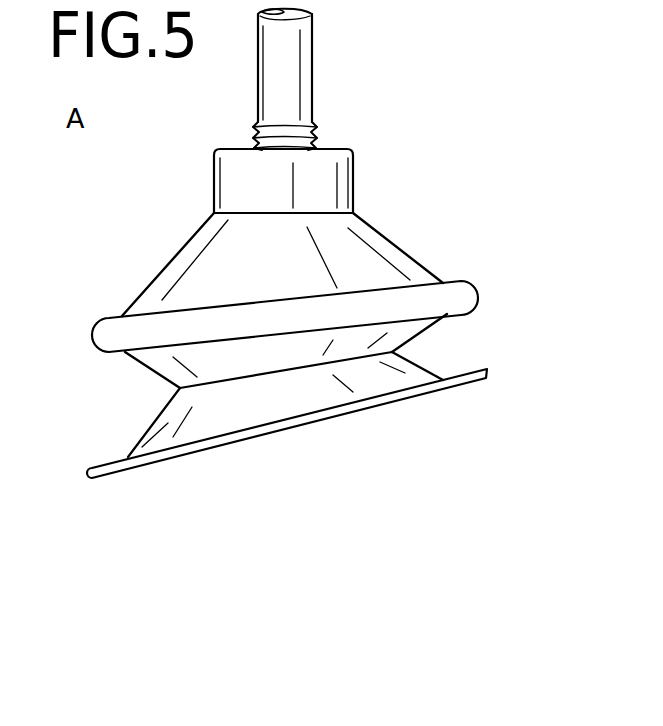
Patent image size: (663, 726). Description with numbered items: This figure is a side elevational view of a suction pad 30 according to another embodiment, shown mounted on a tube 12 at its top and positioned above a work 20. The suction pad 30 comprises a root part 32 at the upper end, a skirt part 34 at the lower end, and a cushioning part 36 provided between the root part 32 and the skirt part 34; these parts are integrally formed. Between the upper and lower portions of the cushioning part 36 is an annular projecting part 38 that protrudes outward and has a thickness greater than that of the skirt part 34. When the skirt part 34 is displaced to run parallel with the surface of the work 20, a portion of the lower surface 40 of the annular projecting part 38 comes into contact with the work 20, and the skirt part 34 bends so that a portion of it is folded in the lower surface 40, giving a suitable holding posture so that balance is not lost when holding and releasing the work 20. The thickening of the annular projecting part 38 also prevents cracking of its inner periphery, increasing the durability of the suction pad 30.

The tube 12 is at (292, 82).
The work 20 is at (490, 372).
The suction pad 30 is at (430, 123).
The root part 32 is at (330, 188).
The skirt part 34 is at (162, 426).
The cushioning part 36 is at (212, 273).
The annular projecting part 38 is at (465, 280).
The lower surface 40 is at (448, 317).